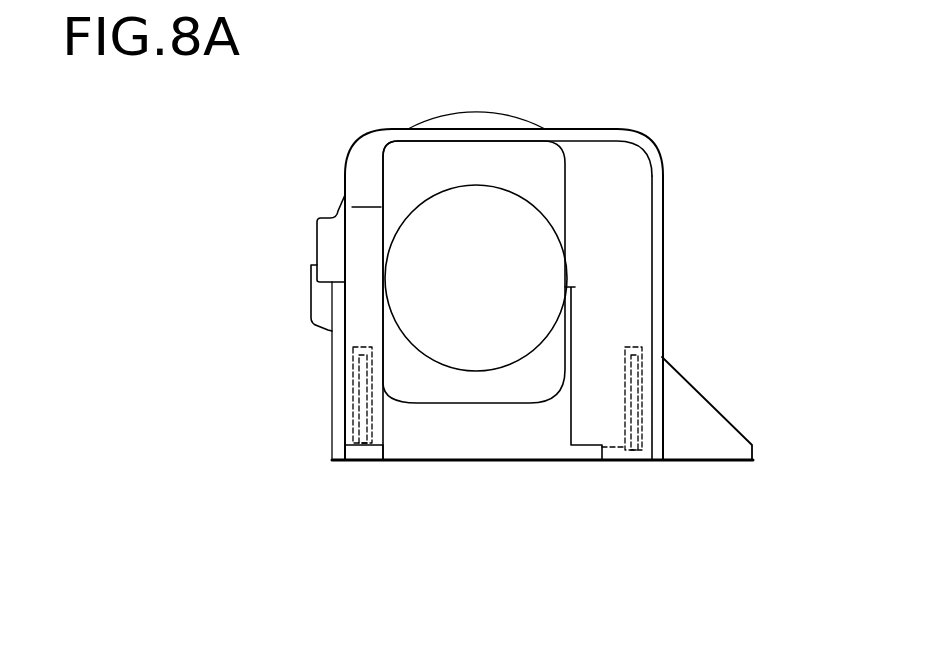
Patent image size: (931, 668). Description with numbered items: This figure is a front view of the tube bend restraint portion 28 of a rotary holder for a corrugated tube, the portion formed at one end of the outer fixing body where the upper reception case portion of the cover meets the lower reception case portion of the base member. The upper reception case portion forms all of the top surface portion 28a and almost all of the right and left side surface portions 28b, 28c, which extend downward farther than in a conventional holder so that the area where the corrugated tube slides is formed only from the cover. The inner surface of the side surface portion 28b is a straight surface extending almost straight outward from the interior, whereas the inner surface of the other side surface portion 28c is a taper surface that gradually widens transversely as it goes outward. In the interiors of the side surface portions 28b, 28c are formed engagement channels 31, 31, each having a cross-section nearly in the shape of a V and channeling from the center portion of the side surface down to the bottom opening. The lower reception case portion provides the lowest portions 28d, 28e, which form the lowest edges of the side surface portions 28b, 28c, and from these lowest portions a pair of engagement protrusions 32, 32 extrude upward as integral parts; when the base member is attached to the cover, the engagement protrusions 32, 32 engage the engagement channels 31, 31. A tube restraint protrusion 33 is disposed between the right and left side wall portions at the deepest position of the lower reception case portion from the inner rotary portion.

The tube bend restraint portion 28 is at (668, 211).
The top surface portion 28a is at (571, 140).
The side surface portion 28b is at (357, 240).
The side surface portion 28c is at (641, 261).
The lowest portion 28d is at (364, 453).
The lowest portion 28e is at (588, 453).
The engagement channel 31 is at (355, 371).
The engagement protrusion 32 is at (355, 424).
The tube restraint protrusion 33 is at (470, 452).